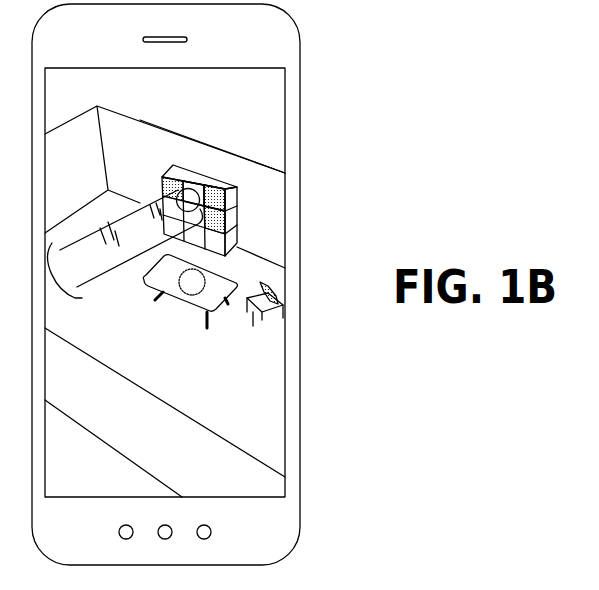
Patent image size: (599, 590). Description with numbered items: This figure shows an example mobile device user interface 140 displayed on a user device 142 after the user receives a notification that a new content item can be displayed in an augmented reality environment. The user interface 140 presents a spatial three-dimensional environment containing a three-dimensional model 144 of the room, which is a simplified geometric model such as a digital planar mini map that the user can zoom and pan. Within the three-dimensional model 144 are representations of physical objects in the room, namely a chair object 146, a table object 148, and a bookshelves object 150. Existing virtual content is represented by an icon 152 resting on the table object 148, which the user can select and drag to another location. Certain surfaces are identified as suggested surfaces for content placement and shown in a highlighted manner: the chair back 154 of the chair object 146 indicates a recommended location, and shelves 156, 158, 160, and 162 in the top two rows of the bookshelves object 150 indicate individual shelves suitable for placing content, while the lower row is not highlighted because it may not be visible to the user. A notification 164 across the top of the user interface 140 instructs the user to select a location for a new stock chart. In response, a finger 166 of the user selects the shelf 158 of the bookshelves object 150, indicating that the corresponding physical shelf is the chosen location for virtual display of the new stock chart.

The user interface 140 is at (272, 392).
The user device 142 is at (300, 42).
The 3D model 144 is at (165, 128).
The chair object 146 is at (267, 318).
The table object 148 is at (178, 297).
The bookshelves object 150 is at (213, 178).
The icon 152 is at (192, 295).
The chair back 154 is at (270, 296).
The shelf 156 is at (163, 176).
The shelf 158 is at (224, 186).
The shelf 160 is at (236, 198).
The shelf 162 is at (237, 229).
The notification 164 is at (275, 82).
The finger 166 is at (92, 282).